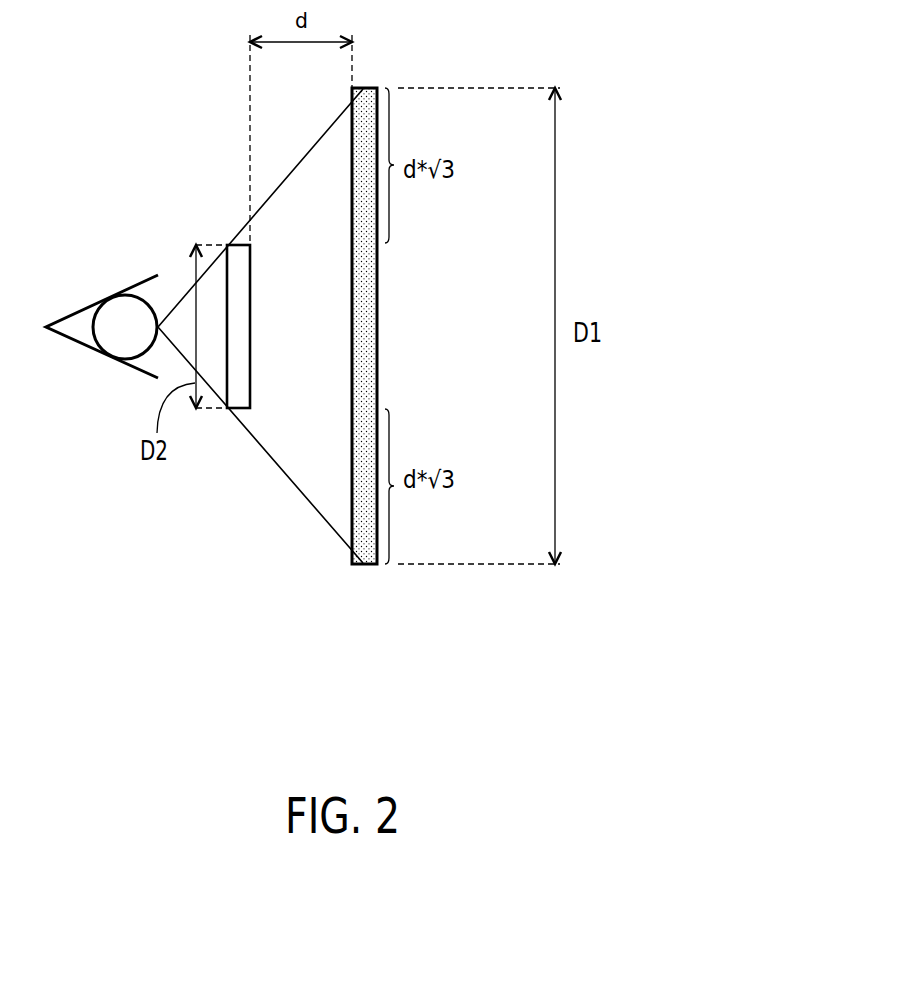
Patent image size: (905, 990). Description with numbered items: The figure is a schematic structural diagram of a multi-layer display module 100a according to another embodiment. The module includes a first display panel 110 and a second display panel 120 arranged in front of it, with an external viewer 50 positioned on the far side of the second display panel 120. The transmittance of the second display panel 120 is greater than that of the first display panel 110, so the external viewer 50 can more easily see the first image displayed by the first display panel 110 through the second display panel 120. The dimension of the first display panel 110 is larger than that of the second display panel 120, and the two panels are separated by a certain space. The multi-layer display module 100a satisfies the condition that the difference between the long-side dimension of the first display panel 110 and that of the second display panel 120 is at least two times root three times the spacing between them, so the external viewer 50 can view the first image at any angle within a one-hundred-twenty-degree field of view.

The external viewer 50 is at (122, 310).
The first display panel 110 is at (367, 287).
The second display panel 120 is at (241, 287).
The multi-layer display module 100a is at (548, 685).